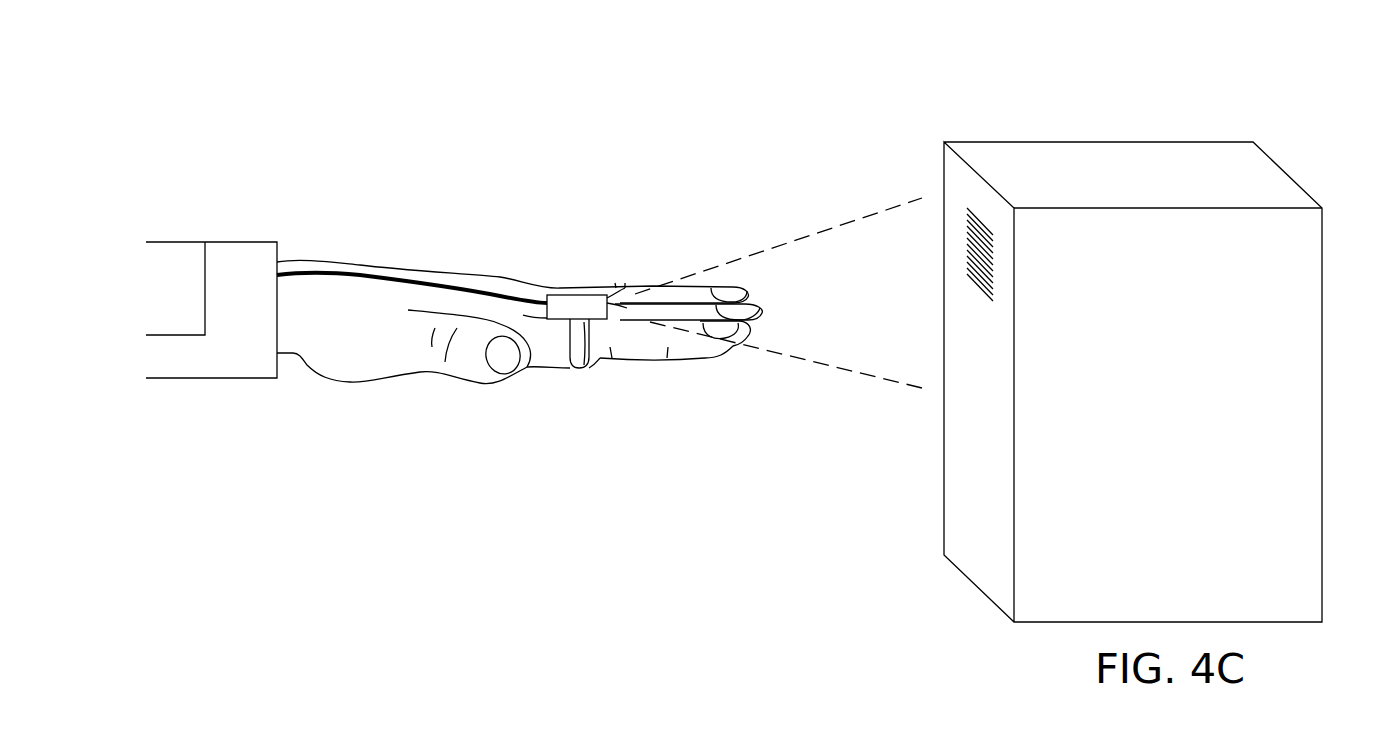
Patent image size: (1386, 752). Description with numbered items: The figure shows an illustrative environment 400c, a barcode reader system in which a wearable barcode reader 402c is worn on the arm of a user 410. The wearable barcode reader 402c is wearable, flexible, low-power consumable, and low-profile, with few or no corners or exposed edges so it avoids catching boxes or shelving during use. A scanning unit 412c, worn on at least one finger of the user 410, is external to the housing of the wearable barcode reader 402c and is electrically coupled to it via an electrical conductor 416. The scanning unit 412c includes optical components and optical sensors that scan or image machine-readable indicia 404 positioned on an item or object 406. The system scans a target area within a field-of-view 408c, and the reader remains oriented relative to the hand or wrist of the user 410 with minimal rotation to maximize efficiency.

The environment 400c is at (276, 111).
The wearable barcode reader 402c is at (239, 236).
The machine-readable indicia 404 is at (983, 286).
The item or object 406 is at (1195, 432).
The field-of-view 408c is at (776, 320).
The user 410 is at (352, 374).
The scanning unit 412c is at (578, 303).
The electrical conductor 416 is at (435, 285).